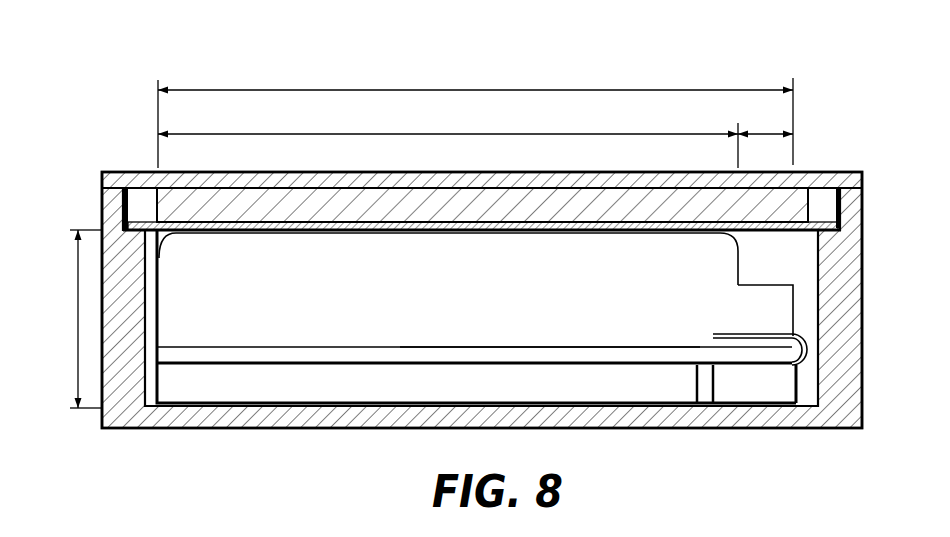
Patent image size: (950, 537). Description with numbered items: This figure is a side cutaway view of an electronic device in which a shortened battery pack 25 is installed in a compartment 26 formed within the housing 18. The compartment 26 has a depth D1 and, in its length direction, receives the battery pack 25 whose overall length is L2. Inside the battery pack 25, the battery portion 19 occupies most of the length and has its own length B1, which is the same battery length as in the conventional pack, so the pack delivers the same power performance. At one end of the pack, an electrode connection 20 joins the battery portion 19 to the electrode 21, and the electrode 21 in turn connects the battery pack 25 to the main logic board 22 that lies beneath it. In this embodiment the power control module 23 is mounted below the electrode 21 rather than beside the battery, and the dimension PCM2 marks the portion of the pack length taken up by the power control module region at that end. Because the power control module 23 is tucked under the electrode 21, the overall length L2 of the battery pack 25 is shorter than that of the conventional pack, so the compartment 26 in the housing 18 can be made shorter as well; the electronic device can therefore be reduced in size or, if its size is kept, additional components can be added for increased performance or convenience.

The housing 18 is at (647, 417).
The battery portion 19 is at (493, 255).
The electrode connection 20 is at (803, 328).
The electrode 21 is at (808, 362).
The main logic board 22 is at (282, 388).
The power control module 23 is at (747, 382).
The battery pack 25 is at (565, 350).
The compartment 26 is at (803, 383).
The overall length of battery pack L2 is at (468, 90).
The battery portion length B1 is at (468, 134).
The power control module length PCM2 is at (770, 133).
The compartment depth D1 is at (75, 317).